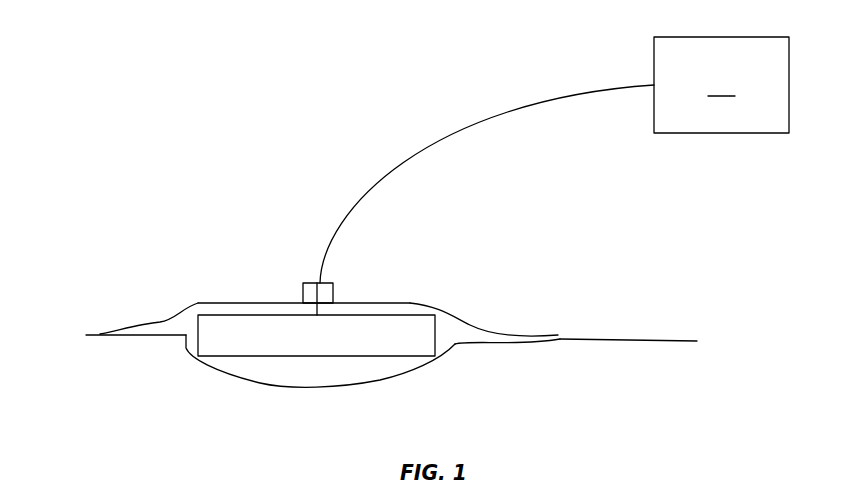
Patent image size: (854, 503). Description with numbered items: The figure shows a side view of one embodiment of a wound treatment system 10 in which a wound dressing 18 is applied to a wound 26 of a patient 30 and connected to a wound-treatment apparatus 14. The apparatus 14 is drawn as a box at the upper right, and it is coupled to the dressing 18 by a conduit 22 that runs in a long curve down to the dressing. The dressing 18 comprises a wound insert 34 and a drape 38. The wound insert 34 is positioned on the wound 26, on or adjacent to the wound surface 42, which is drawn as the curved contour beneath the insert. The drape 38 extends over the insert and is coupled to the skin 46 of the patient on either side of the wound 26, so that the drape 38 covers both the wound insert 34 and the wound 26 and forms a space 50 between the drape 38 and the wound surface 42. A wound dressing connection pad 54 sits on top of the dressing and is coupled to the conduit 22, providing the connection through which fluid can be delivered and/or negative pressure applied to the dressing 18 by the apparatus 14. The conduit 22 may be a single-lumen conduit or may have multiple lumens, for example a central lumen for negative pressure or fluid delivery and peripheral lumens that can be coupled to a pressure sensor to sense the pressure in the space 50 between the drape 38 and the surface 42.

The wound treatment system 10 is at (313, 58).
The wound-treatment apparatus 14 is at (721, 85).
The wound dressing 18 is at (270, 271).
The conduit 22 is at (457, 135).
The wound 26 is at (274, 399).
The patient 30 is at (675, 339).
The wound insert 34 is at (403, 348).
The drape 38 is at (467, 322).
The wound surface 42 is at (236, 371).
The skin 46 is at (102, 333).
The space 50 is at (450, 338).
The wound dressing connection pad 54 is at (325, 283).